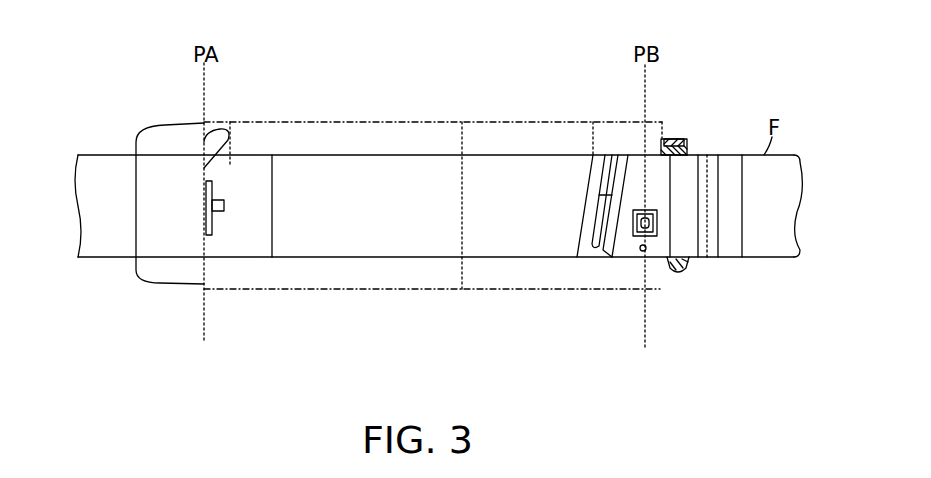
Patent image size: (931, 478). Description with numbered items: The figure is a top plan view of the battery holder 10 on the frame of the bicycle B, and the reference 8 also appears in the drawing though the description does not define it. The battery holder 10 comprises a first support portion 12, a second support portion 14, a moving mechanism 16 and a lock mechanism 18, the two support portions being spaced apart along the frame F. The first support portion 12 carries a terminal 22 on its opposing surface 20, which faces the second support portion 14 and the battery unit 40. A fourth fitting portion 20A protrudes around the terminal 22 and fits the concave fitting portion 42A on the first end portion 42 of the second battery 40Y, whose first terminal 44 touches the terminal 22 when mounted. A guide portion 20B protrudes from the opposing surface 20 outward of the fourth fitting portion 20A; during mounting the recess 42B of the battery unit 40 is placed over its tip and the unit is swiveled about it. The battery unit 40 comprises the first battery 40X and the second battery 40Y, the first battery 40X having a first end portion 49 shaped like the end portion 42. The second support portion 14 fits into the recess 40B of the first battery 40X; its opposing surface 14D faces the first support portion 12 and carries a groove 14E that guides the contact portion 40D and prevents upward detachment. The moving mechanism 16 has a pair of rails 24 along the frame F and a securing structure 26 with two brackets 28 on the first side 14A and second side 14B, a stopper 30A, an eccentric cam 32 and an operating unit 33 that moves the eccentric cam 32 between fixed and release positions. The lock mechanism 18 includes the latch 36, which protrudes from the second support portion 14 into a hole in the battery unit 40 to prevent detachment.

The image forming apparatus 8 is at (767, 90).
The battery holder 10 is at (122, 68).
The first support portion 12 is at (155, 125).
The second support portion 14 is at (598, 152).
The first side 14A is at (645, 262).
The second side 14B is at (637, 154).
The opposing surface 14D is at (590, 208).
The groove 14E is at (616, 178).
The moving mechanism 16 is at (489, 342).
The lock mechanism 18 is at (774, 202).
The opposing surface 20 is at (208, 268).
The fourth fitting portion 20A is at (213, 228).
The guide portion 20B is at (226, 130).
The terminal 22 is at (224, 205).
The rails 24 is at (498, 262).
The securing structure 26 is at (699, 341).
The brackets 28 is at (689, 152).
The stopper 30A is at (653, 262).
The eccentric cam 32 is at (678, 141).
The operating unit 33 is at (668, 140).
The latch 36 is at (657, 220).
The battery unit 40 is at (510, 59).
The first battery 40X is at (497, 121).
The second battery 40Y is at (425, 121).
The recess 40B is at (582, 262).
The contact portion 40D is at (600, 262).
The first end portion 42 is at (198, 283).
The fitting portion 42A is at (213, 190).
The recess 42B is at (231, 137).
The first terminal 44 is at (206, 212).
The first end portion 49 is at (460, 262).